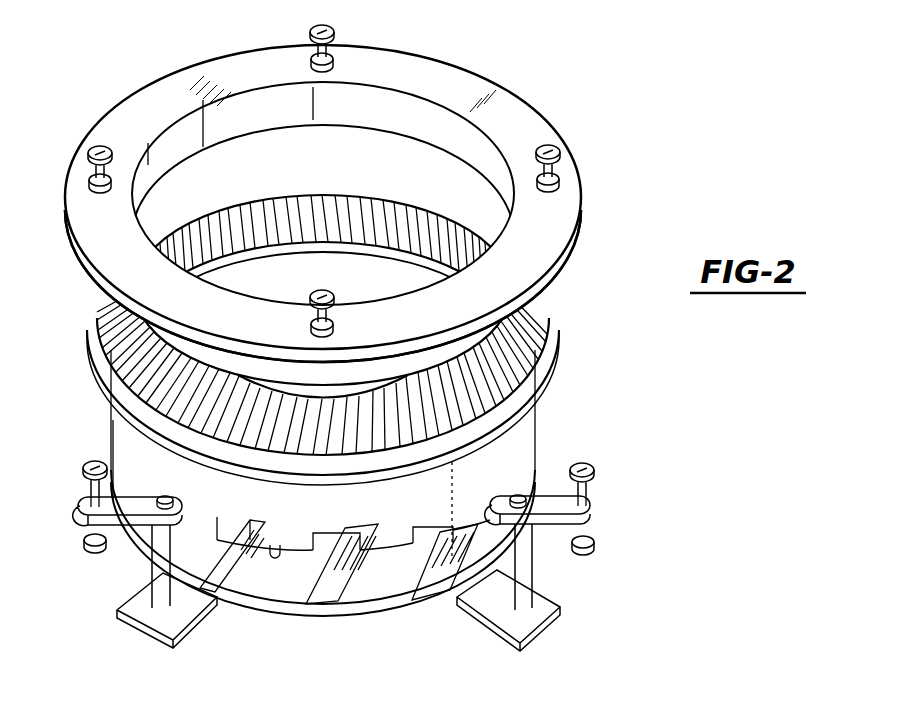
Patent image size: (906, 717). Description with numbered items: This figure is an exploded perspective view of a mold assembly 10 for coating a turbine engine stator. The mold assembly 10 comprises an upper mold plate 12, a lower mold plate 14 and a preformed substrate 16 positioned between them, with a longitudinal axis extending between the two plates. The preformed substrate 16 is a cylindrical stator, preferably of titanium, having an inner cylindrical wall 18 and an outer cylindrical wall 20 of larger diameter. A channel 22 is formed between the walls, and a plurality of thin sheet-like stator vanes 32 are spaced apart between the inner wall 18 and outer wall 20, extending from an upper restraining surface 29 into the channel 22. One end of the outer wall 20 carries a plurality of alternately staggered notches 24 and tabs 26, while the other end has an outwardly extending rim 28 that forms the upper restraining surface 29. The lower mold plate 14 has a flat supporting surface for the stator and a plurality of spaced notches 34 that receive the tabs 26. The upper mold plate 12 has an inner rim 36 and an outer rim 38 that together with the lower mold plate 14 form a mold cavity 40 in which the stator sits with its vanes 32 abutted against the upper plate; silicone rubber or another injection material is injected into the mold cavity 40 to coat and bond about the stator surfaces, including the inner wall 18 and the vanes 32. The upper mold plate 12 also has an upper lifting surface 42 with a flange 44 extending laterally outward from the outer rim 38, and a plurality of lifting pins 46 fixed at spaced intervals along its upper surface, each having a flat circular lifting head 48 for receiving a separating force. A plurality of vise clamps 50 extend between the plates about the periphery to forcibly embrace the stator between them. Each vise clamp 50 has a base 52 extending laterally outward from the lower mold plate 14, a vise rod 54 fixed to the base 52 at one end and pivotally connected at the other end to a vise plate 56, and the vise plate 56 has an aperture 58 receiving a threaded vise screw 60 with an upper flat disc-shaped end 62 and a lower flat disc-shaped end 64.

The mold assembly 10 is at (662, 101).
The upper mold plate 12 is at (562, 118).
The lower mold plate 14 is at (415, 610).
The preformed substrate 16 is at (550, 410).
The inner cylindrical wall 18 is at (366, 258).
The outer cylindrical wall 20 is at (120, 440).
The channel 22 is at (312, 212).
The notches 24 is at (350, 530).
The tabs 26 is at (277, 545).
The outwardly extending rim 28 is at (550, 372).
The upper restraining surface 29 is at (550, 322).
The stator vanes 32 is at (430, 245).
The notches 34 is at (318, 607).
The inner rim 36 is at (214, 116).
The outer rim 38 is at (109, 320).
The mold cavity 40 is at (240, 152).
The upper lifting surface 42 is at (478, 88).
The flange 44 is at (570, 258).
The lifting pins 46 is at (108, 170).
The lifting head 48 is at (100, 150).
The vise clamps 50 is at (368, 564).
The base 52 is at (522, 612).
The vise rod 54 is at (545, 620).
The vise plate 56 is at (590, 518).
The aperture 58 is at (588, 508).
The vise screw 60 is at (585, 492).
The upper flat disc-shaped end 62 is at (592, 466).
The lower flat disc-shaped end 64 is at (585, 595).